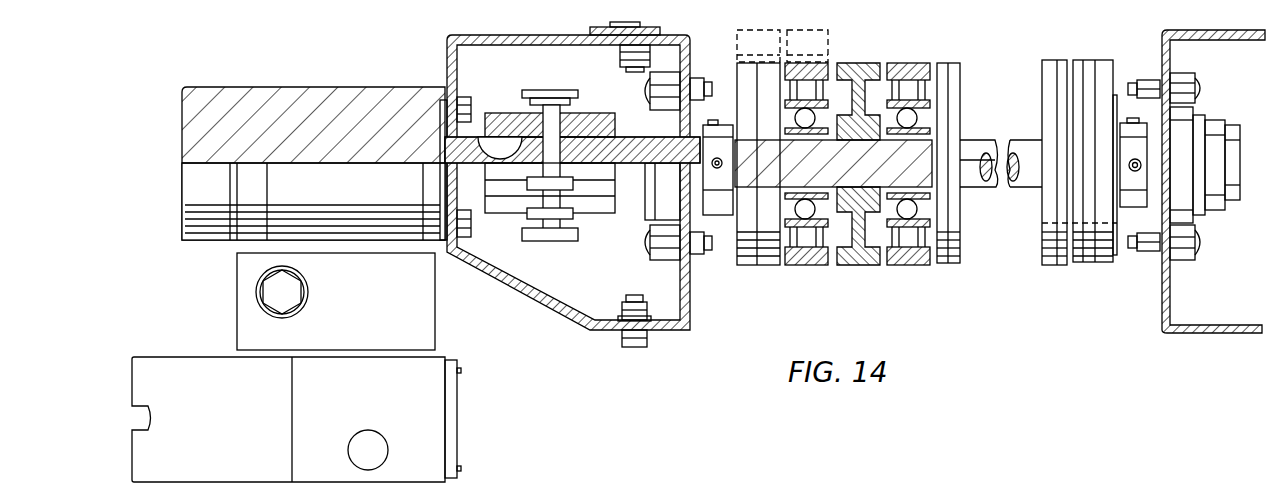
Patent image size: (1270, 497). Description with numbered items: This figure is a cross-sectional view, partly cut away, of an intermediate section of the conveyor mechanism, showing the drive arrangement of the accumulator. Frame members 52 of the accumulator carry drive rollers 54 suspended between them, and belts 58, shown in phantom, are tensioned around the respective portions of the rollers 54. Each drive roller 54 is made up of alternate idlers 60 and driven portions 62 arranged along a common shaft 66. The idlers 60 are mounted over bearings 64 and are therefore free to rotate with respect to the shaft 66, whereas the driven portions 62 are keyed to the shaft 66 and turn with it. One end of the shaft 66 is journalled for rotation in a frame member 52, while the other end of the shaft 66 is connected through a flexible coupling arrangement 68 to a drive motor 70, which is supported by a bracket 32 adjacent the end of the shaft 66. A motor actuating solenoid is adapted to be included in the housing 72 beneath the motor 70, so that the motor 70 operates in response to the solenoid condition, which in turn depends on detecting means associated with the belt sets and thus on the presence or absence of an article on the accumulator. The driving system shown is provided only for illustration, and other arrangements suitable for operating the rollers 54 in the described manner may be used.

The mounting bracket 32 is at (660, 332).
The frame member 52 is at (1225, 334).
The drive roller 54 is at (1118, 258).
The belt 58 is at (828, 44).
The idler 60 is at (905, 268).
The driven portion 62 is at (847, 268).
The bearing 64 is at (917, 118).
The shaft 66 is at (980, 190).
The flexible coupling arrangement 68 is at (588, 228).
The drive motor 70 is at (343, 87).
The housing 72 is at (435, 348).